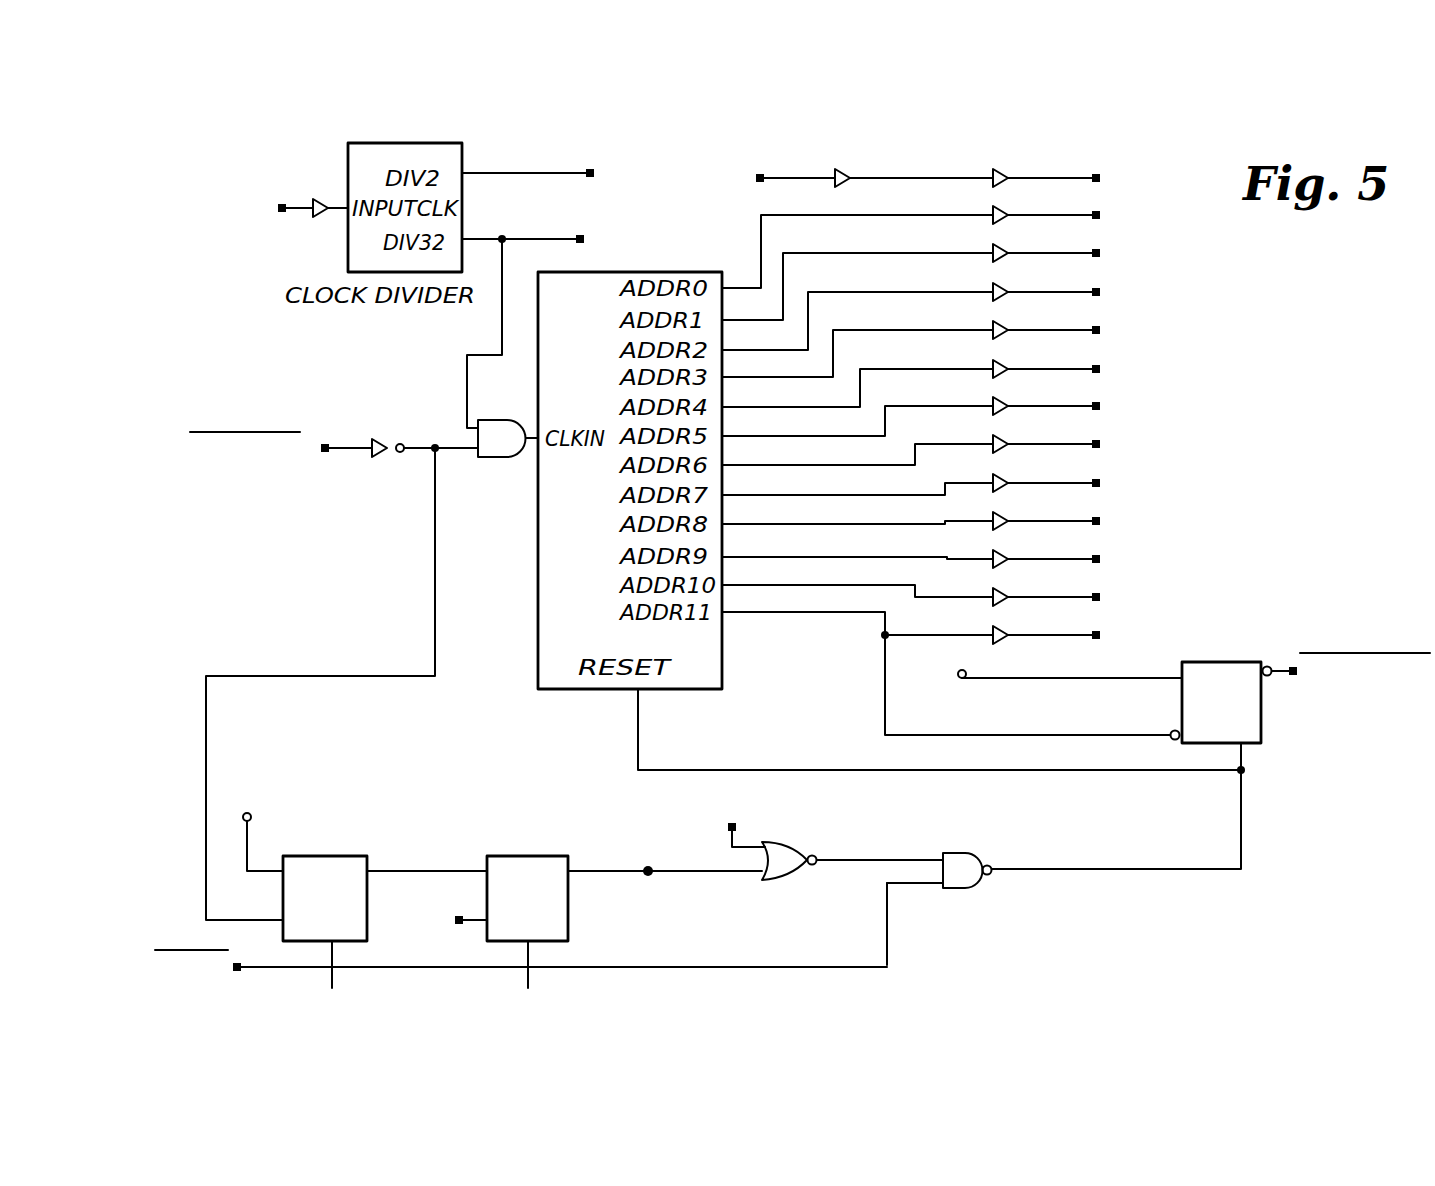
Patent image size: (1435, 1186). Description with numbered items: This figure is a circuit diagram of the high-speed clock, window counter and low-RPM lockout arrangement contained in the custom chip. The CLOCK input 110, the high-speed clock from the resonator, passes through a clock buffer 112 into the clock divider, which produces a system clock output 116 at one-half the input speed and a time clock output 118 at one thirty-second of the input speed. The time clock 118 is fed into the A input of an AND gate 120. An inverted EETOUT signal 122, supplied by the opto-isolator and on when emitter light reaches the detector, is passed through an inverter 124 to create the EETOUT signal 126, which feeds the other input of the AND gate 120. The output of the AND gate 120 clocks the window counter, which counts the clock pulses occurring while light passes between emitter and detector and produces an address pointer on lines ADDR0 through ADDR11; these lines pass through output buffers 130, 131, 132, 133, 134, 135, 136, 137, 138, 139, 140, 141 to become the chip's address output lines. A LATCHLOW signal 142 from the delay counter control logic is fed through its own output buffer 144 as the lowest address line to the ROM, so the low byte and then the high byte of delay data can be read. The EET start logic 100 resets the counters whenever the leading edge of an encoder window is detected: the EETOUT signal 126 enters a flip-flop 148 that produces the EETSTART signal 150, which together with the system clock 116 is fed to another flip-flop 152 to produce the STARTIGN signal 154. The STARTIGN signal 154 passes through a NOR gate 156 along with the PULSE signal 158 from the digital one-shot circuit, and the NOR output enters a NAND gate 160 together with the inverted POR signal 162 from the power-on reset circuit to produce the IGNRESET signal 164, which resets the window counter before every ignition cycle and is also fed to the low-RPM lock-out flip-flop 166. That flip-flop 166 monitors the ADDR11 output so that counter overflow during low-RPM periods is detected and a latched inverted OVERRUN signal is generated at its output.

The EET start logic 100 is at (450, 725).
The CLOCK input 110 is at (240, 192).
The clock buffer 112 is at (323, 196).
The system clock output 116 is at (594, 170).
The time clock output 118 is at (584, 239).
The AND gate 120 is at (504, 460).
The inverted EETOUT signal 122 is at (258, 430).
The inverter 124 is at (378, 458).
The EETOUT signal 126 is at (418, 408).
The output buffer 130 is at (994, 212).
The output buffer 131 is at (994, 250).
The output buffer 132 is at (994, 289).
The output buffer 133 is at (994, 327).
The output buffer 134 is at (994, 366).
The output buffer 135 is at (994, 403).
The output buffer 136 is at (994, 441).
The output buffer 137 is at (994, 480).
The output buffer 138 is at (994, 518).
The output buffer 139 is at (994, 556).
The output buffer 140 is at (994, 594).
The output buffer 141 is at (1003, 643).
The LATCHLOW signal 142 is at (764, 172).
The output buffer 144 is at (998, 172).
The flip-flop 148 is at (318, 858).
The EETSTART signal 150 is at (433, 822).
The flip-flop 152 is at (528, 856).
The STARTIGN signal 154 is at (654, 836).
The NOR gate 156 is at (797, 846).
The PULSE input 158 is at (748, 797).
The NAND gate 160 is at (960, 870).
The POR-bar input 162 is at (190, 946).
The IGNRESET signal 164 is at (1163, 838).
The flip-flop 166 is at (1222, 662).